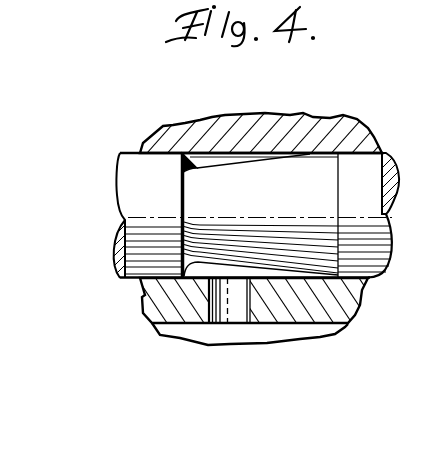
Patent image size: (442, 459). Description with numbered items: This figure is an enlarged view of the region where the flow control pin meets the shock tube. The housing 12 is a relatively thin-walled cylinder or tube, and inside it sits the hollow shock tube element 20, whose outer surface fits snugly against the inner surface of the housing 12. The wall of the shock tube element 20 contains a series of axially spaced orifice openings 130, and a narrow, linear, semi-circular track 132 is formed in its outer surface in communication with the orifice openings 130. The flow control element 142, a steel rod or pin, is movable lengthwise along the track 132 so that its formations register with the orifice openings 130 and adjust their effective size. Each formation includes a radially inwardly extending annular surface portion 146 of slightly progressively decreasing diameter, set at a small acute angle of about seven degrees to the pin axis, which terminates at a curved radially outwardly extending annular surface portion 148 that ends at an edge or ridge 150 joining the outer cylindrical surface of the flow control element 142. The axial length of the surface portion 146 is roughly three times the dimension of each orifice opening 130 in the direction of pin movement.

The housing 12 is at (342, 112).
The shock tube element 20 is at (347, 308).
The orifice openings 130 is at (246, 302).
The track 132 is at (267, 279).
The flow control element 142 is at (382, 150).
The annular surface portion 146 is at (268, 140).
The curved annular surface portion 148 is at (208, 150).
The ridge 150 is at (185, 125).